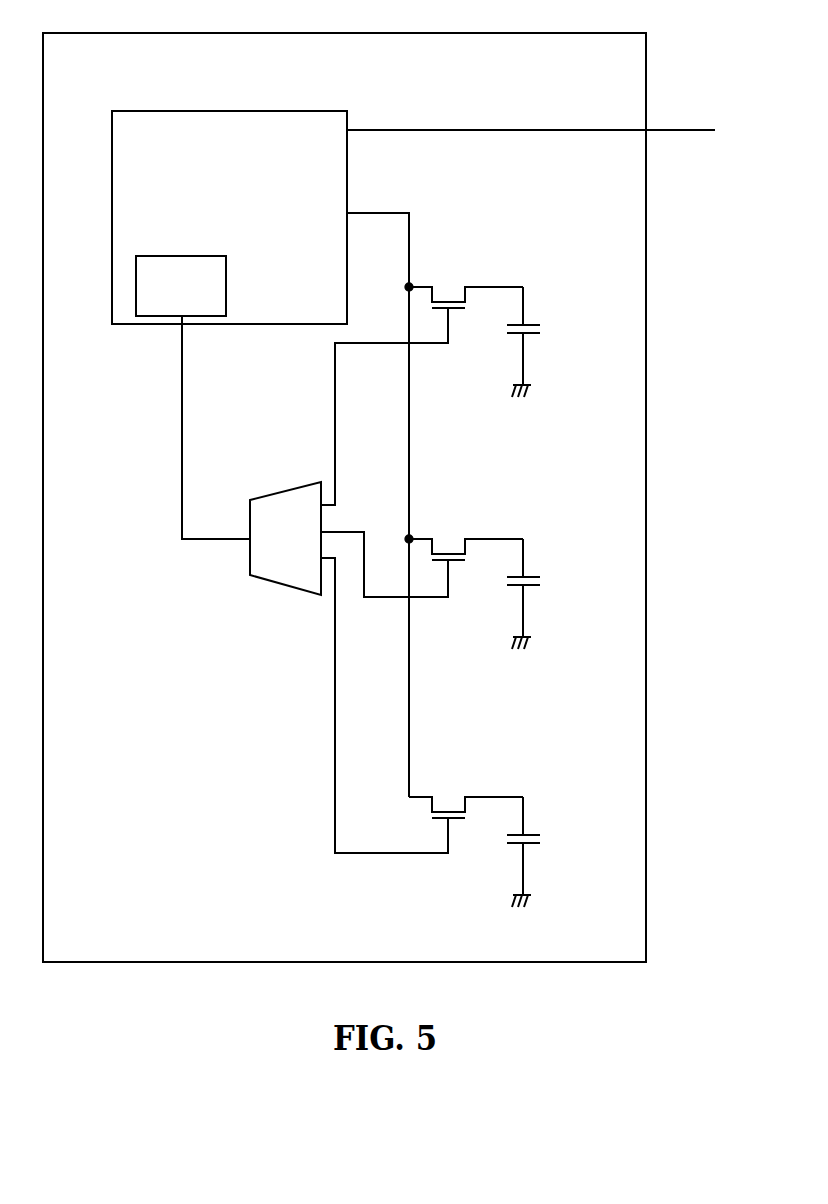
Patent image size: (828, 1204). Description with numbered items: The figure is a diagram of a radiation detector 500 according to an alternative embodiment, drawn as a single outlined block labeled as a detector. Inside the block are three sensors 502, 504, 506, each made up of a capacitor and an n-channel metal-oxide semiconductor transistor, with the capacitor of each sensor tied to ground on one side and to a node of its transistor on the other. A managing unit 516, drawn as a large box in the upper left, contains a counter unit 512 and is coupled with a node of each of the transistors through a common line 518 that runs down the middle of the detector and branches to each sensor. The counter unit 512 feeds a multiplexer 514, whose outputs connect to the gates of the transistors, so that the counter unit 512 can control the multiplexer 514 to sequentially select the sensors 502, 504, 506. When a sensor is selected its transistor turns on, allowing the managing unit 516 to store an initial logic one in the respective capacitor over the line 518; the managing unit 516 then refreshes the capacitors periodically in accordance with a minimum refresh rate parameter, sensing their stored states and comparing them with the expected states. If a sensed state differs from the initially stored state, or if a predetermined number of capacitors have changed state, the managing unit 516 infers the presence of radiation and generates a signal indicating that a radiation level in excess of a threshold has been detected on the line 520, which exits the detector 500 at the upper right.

The radiation detector 500 is at (511, 33).
The sensor 502 is at (518, 280).
The sensor 504 is at (520, 537).
The sensor 506 is at (520, 794).
The counter unit 512 is at (173, 256).
The multiplexer 514 is at (250, 567).
The managing unit 516 is at (180, 111).
The line 518 is at (376, 213).
The line 520 is at (667, 130).